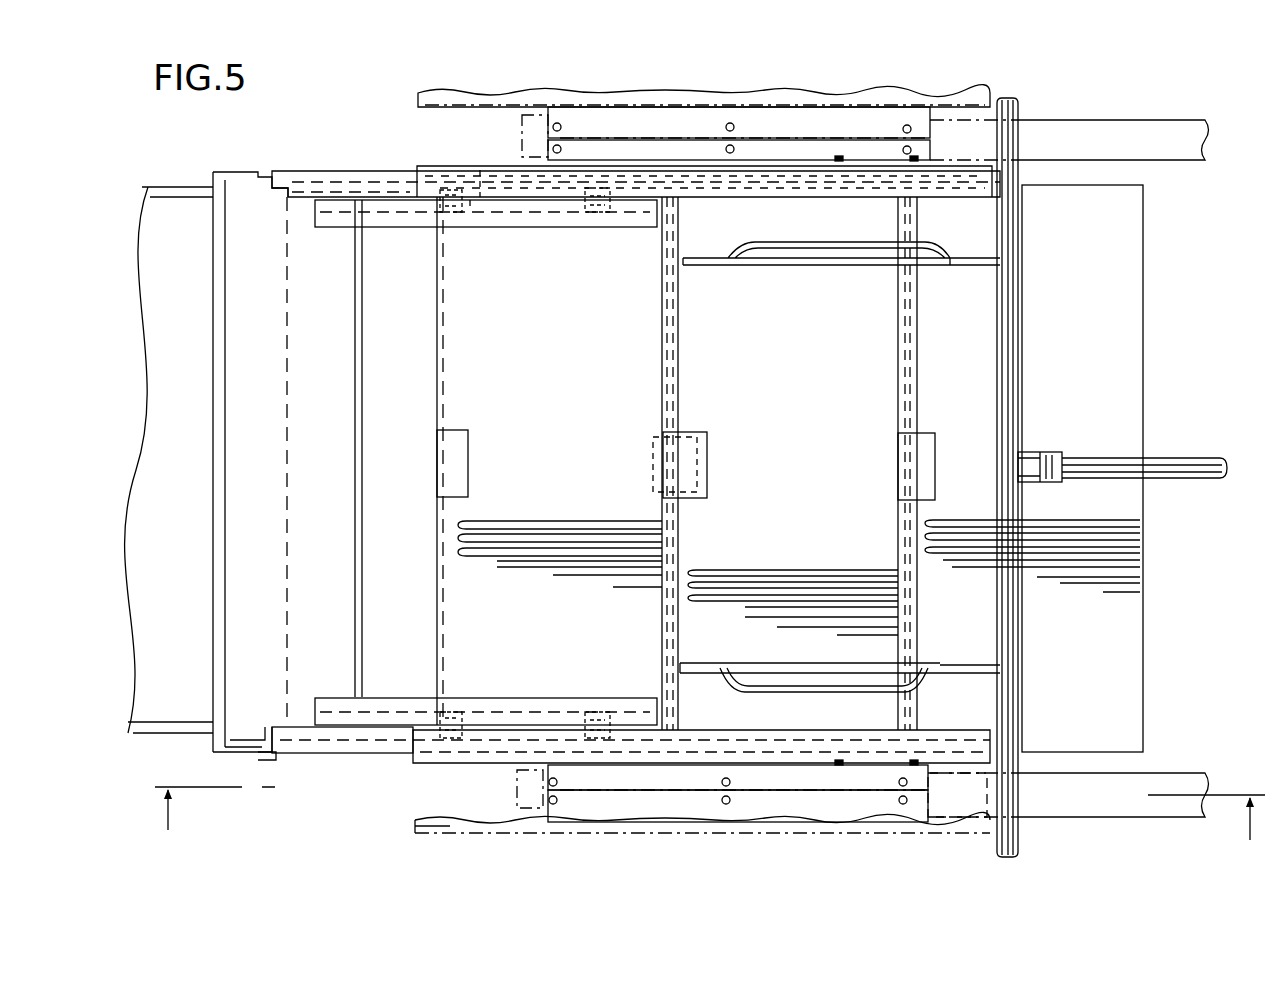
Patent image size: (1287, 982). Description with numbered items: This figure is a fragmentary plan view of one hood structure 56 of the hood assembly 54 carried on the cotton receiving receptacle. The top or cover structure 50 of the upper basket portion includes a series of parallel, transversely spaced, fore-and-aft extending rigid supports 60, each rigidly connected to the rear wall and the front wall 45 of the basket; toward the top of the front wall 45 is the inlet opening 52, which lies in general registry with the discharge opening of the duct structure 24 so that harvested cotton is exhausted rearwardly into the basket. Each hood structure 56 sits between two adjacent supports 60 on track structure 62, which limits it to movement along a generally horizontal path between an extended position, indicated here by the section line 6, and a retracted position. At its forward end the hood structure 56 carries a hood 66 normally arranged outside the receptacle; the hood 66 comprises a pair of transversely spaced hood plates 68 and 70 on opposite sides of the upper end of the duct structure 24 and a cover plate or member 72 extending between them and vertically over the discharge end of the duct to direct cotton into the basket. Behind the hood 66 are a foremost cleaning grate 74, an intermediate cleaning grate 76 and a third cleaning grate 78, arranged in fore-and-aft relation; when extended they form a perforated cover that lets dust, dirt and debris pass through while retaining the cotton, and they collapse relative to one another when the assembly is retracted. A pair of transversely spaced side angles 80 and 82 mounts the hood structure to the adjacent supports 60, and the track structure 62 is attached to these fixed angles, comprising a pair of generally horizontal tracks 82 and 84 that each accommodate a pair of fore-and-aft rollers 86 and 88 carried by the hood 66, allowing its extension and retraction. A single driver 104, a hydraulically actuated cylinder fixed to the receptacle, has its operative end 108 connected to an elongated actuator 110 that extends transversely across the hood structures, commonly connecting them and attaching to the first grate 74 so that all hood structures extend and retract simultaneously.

The section line 6 is at (710, 799).
The duct structure 24 is at (182, 183).
The front wall 45 is at (415, 826).
The top or cover structure 50 is at (1148, 118).
The inlet opening 52 is at (458, 822).
The hood assembly 54 is at (348, 168).
The hood structure 56 is at (363, 758).
The support 60 is at (1178, 150).
The track structure 62 is at (437, 165).
The hood 66 is at (258, 758).
The hood plate 68 is at (268, 755).
The hood plate 70 is at (252, 172).
The cover plate or member 72 is at (338, 446).
The foremost cleaning grate 74 is at (558, 399).
The intermediate cleaning grate 76 is at (813, 411).
The third cleaning grate 78 is at (1092, 308).
The side angle 80 is at (783, 120).
The side angle / track 82 is at (822, 158).
The track 84 is at (505, 198).
The roller 86 is at (455, 208).
The roller 88 is at (598, 208).
The driver 104 is at (1170, 452).
The operative end 108 is at (1063, 455).
The actuator 110 is at (688, 458).